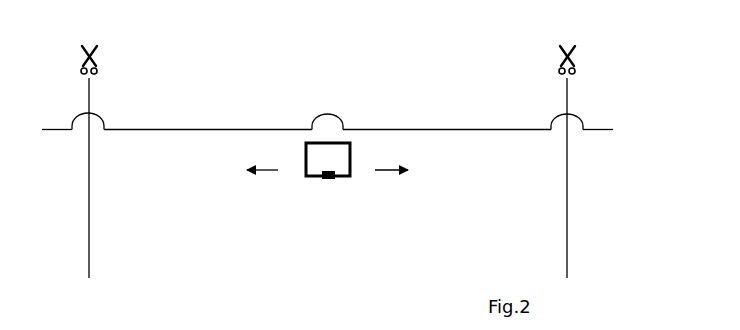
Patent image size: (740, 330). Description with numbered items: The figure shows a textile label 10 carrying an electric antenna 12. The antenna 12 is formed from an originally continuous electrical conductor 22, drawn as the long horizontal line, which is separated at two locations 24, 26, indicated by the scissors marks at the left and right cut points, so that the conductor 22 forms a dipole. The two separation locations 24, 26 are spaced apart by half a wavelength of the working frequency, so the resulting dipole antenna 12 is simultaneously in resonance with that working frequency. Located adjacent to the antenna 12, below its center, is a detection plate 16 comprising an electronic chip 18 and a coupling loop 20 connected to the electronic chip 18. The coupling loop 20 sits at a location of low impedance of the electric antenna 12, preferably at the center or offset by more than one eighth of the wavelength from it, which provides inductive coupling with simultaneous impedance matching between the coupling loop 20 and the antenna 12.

The textile label 10 is at (590, 160).
The electric antenna 12 is at (505, 129).
The detection plate 16 is at (300, 190).
The electronic chip 18 is at (328, 181).
The coupling loop 20 is at (355, 139).
The electrical conductor 22 is at (186, 131).
The separation location 24 is at (106, 116).
The separation location 26 is at (586, 117).